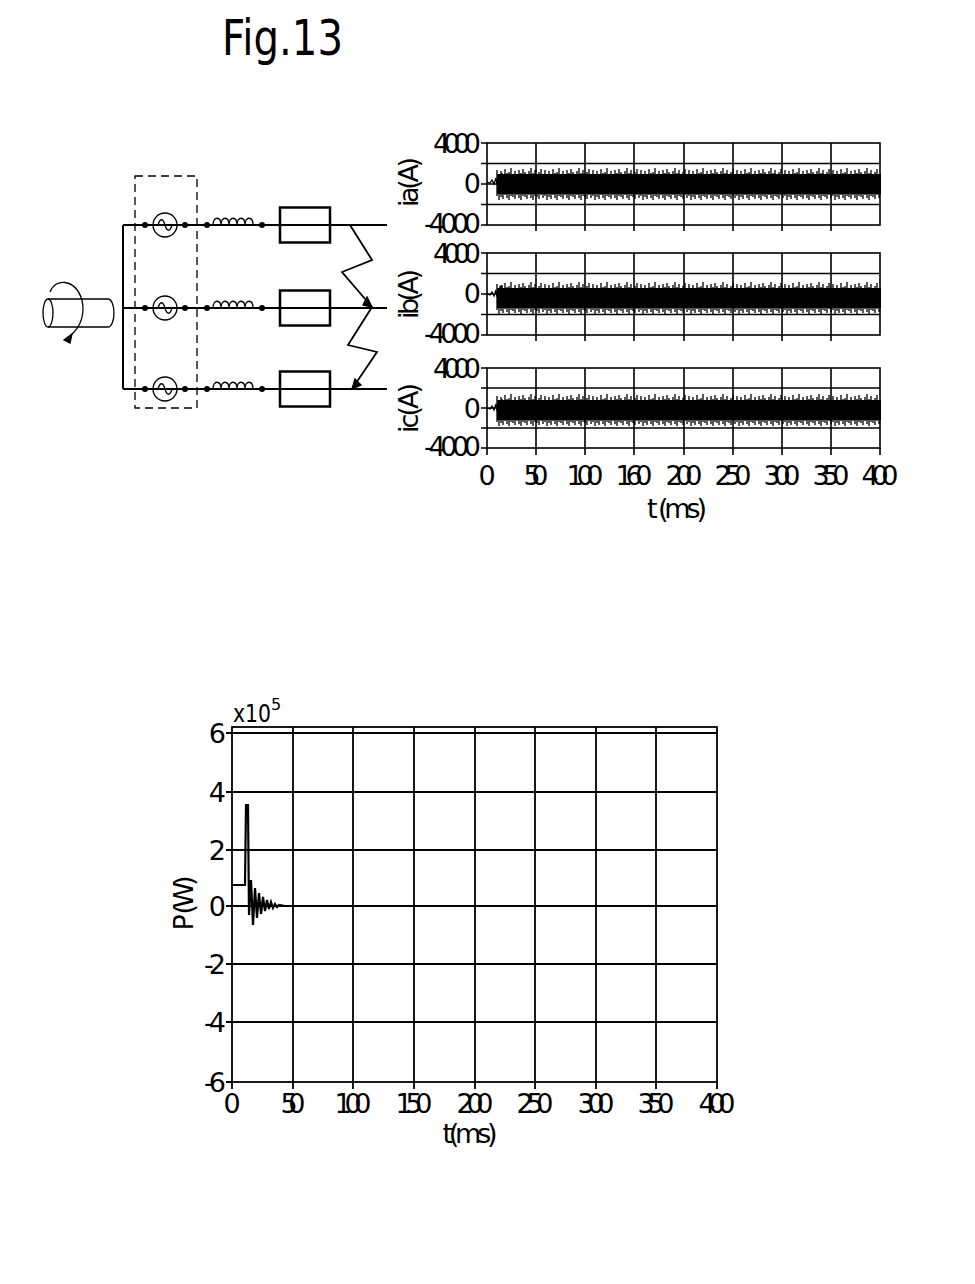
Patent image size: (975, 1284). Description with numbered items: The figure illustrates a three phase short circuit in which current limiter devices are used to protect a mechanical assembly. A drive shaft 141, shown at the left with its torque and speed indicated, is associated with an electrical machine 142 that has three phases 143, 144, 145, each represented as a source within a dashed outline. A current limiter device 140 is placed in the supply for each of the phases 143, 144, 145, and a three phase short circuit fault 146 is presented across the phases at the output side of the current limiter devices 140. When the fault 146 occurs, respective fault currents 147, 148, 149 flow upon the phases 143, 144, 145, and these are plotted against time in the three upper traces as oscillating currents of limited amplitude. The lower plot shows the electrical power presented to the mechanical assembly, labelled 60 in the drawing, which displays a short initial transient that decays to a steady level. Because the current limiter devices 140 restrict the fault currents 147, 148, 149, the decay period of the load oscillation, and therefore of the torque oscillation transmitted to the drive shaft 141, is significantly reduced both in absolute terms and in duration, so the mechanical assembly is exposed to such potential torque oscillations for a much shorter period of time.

The power curve P(W) 60 is at (261, 895).
The current limiter device 140 is at (313, 207).
The drive shaft 141 is at (95, 317).
The electrical machine 142 is at (198, 177).
The phase 143 is at (165, 213).
The phase 144 is at (166, 296).
The phase 145 is at (165, 377).
The three phase short circuit fault 146 is at (368, 248).
The fault current 147 is at (665, 176).
The fault current 148 is at (700, 287).
The fault current 149 is at (690, 400).